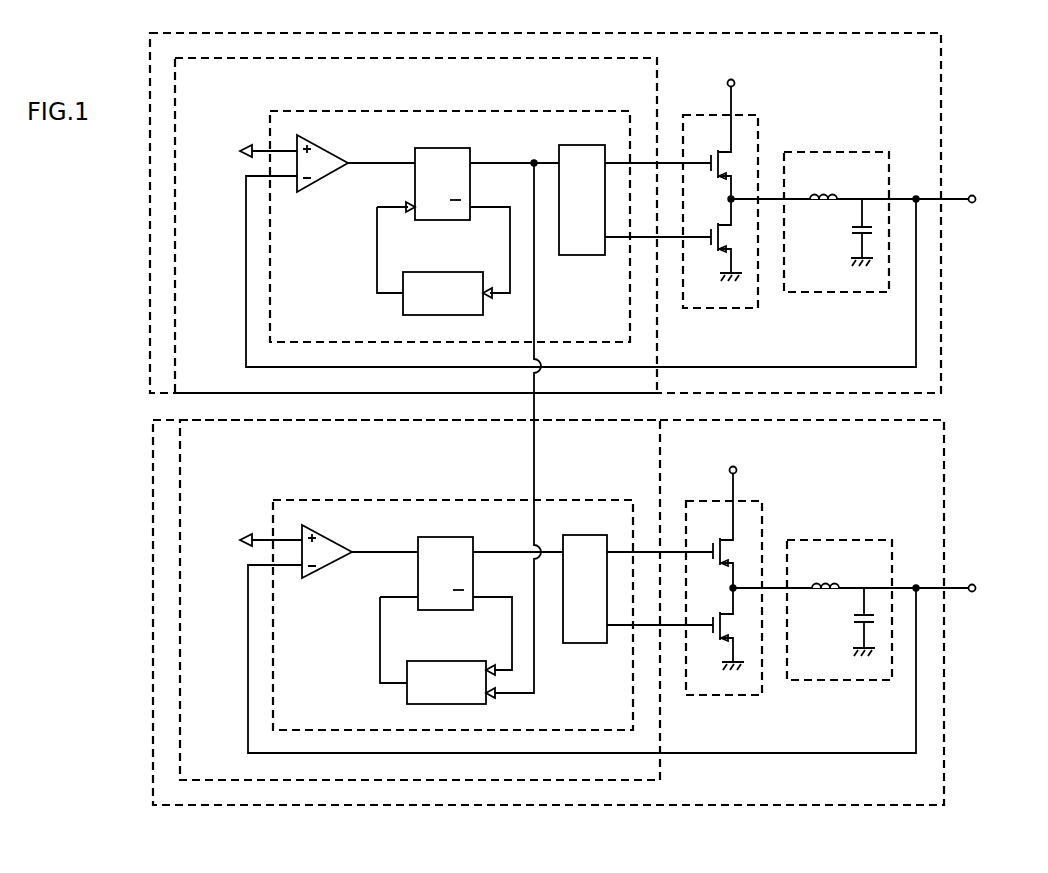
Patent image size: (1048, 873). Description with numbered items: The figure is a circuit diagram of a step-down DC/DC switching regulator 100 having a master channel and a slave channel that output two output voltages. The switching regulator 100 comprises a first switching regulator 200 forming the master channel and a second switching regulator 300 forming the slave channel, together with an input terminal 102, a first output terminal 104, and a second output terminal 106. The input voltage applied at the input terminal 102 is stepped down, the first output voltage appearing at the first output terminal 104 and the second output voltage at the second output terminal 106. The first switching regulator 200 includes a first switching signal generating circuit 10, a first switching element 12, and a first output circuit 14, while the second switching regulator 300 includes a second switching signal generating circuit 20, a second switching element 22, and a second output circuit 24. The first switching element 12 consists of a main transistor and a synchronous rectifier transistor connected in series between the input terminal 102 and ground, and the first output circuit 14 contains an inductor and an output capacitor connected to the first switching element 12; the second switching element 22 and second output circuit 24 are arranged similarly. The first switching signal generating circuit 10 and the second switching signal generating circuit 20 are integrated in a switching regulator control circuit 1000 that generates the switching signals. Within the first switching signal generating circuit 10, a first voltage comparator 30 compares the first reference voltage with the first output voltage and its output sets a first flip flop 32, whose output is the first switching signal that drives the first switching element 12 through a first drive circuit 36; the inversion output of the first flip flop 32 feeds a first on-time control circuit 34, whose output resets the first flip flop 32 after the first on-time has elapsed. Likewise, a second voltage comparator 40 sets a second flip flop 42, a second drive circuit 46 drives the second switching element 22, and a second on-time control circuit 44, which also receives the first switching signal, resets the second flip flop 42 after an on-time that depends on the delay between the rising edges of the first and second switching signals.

The switching regulator 100 is at (586, 840).
The first switching regulator 200 is at (150, 212).
The second switching regulator 300 is at (153, 620).
The switching regulator control circuit 1000 is at (660, 775).
The first switching signal generating circuit 10 is at (446, 111).
The second switching signal generating circuit 20 is at (452, 500).
The first switching element 12 is at (722, 308).
The second switching element 22 is at (724, 695).
The first output circuit 14 is at (838, 292).
The second output circuit 24 is at (840, 680).
The first voltage comparator 30 is at (318, 181).
The second voltage comparator 40 is at (326, 570).
The first flip flop 32 is at (437, 207).
The second flip flop 42 is at (430, 610).
The first on-time control circuit 34 is at (440, 272).
The second on-time control circuit 44 is at (463, 661).
The first drive circuit 36 is at (578, 255).
The second drive circuit 46 is at (585, 643).
The input terminal 102 is at (735, 83).
The first output terminal 104 is at (972, 195).
The second output terminal 106 is at (974, 585).